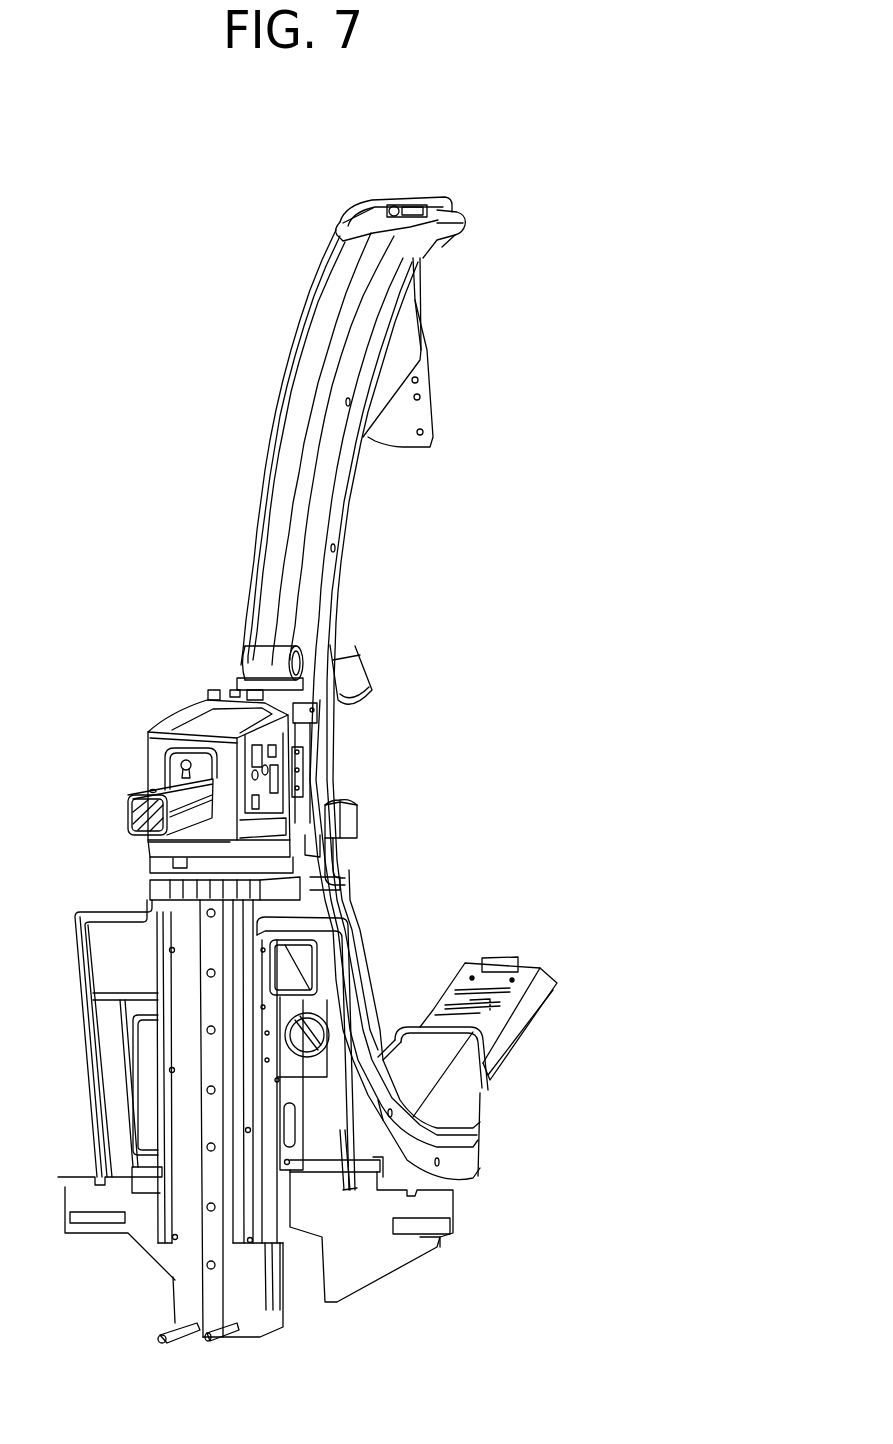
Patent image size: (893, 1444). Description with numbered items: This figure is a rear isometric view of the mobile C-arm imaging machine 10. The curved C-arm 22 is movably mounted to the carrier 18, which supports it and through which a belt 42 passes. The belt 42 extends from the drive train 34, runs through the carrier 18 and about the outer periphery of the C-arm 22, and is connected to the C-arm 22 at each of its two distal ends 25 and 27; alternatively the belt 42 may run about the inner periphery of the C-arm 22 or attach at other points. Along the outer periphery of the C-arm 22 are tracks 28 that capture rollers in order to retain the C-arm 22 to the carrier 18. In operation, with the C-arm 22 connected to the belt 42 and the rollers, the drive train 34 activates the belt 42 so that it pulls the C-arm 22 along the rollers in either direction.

The mobile C-arm imaging machine 10 is at (135, 723).
The carrier 18 is at (313, 684).
The C-arm 22 is at (268, 458).
The distal end 25 is at (394, 185).
The distal end 27 is at (487, 1193).
The tracks 28 is at (372, 200).
The drive train 34 is at (343, 877).
The belt 42 is at (392, 237).